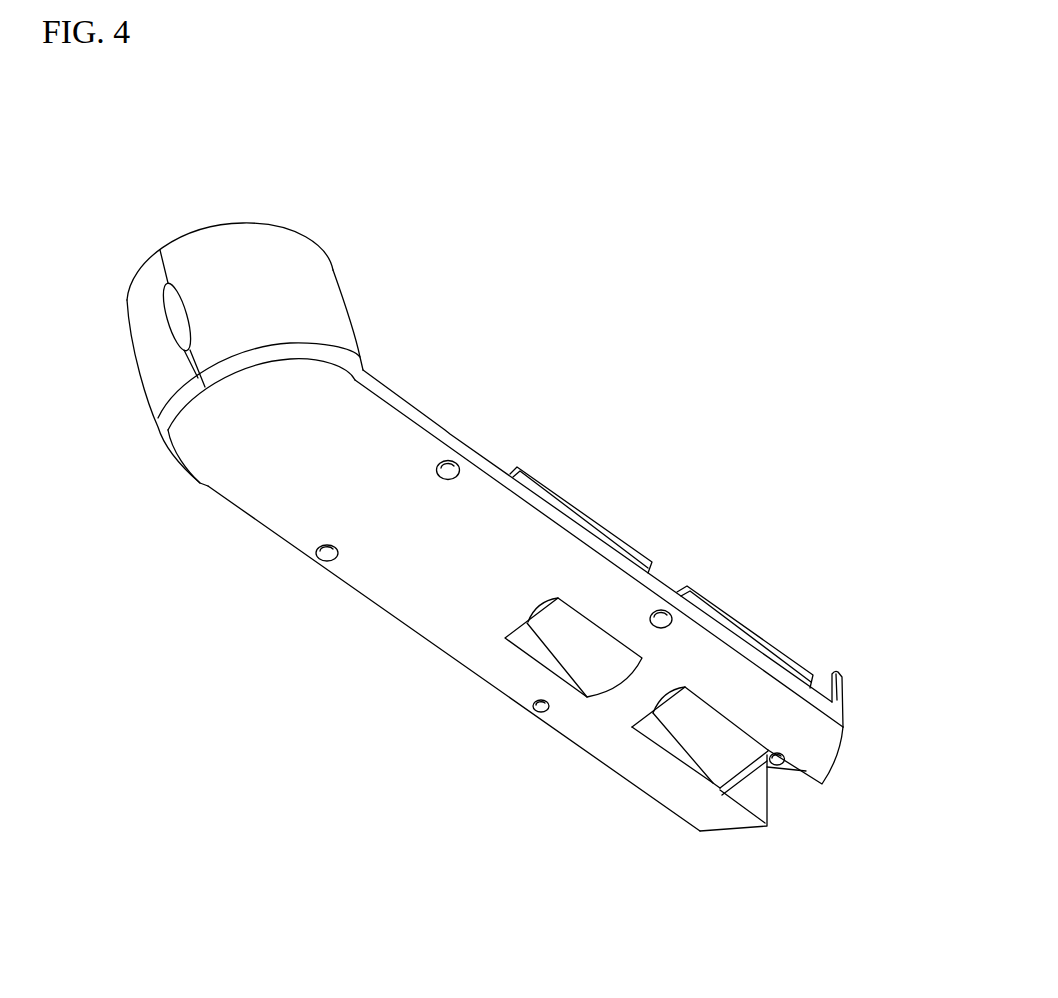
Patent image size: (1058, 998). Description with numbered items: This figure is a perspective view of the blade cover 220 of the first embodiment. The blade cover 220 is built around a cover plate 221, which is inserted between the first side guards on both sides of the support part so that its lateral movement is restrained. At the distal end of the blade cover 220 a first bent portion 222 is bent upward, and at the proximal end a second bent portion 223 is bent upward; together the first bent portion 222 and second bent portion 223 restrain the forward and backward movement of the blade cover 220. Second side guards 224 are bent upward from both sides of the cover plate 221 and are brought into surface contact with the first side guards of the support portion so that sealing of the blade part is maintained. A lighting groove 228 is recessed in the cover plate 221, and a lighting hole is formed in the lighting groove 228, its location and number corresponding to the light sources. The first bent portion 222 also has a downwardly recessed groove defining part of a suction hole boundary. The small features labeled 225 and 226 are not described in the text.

The blade cover 220 is at (145, 166).
The cover plate 221 is at (390, 518).
The first bent portion 222 is at (843, 693).
The second bent portion 223 is at (320, 288).
The second side guards 224 is at (553, 517).
The hole 225 is at (528, 709).
The slot 226 is at (170, 316).
The lighting groove 228 is at (583, 648).